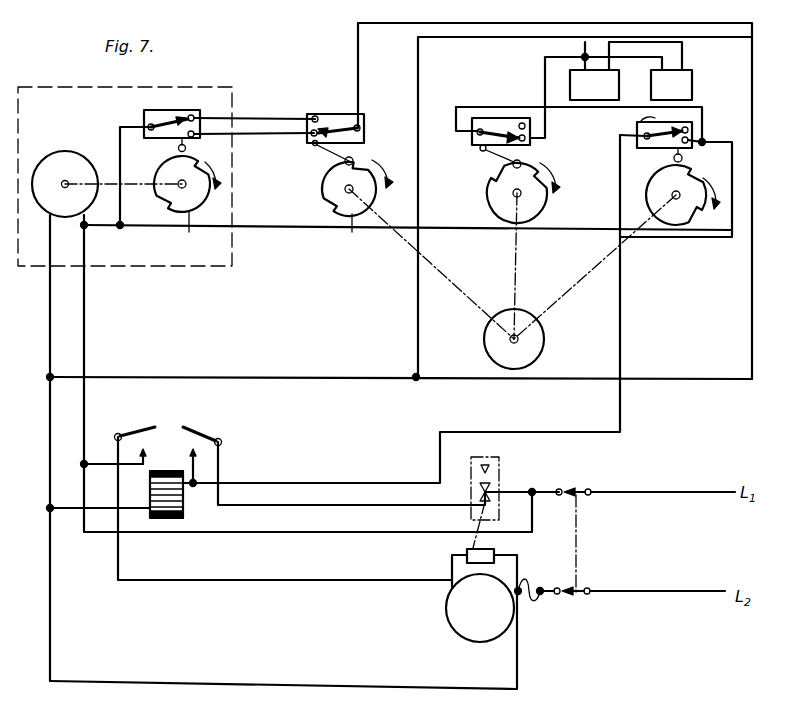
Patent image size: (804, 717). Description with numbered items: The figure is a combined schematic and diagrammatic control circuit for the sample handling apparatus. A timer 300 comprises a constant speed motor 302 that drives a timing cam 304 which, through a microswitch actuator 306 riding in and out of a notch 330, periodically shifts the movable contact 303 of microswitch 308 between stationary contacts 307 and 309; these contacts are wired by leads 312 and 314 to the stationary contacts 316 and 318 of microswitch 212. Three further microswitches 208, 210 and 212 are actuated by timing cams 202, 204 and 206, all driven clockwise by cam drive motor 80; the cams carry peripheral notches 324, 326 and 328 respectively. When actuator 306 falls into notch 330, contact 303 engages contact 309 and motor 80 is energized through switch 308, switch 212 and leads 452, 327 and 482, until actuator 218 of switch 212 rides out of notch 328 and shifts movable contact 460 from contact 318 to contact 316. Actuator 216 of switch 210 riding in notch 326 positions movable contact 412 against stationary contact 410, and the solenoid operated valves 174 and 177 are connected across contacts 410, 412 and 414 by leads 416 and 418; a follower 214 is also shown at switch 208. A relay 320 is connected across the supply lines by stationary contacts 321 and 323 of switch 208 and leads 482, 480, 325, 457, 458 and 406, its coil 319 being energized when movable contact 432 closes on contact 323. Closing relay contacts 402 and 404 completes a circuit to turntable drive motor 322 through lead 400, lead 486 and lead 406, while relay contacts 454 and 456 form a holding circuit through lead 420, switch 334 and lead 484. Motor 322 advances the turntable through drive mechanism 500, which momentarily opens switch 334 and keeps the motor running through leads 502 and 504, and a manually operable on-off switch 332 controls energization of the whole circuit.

The timer 300 is at (48, 88).
The constant speed motor 302 is at (52, 152).
The movable contact 303 is at (163, 110).
The timing cam 304 is at (205, 193).
The microswitch actuator 306 is at (178, 150).
The stationary contact 307 is at (195, 115).
The microswitch 308 is at (135, 120).
The stationary contact 309 is at (218, 162).
The lead 312 is at (232, 117).
The lead 314 is at (240, 136).
The stationary contact 316 is at (312, 112).
The stationary contact 318 is at (312, 136).
The relay coil 319 is at (186, 508).
The relay 320 is at (193, 423).
The stationary contact 321 is at (622, 138).
The drive motor 322 is at (468, 628).
The stationary contact 323 is at (690, 139).
The notch 324 is at (718, 187).
The lead 325 is at (289, 483).
The notch 326 is at (570, 178).
The lead 327 is at (313, 376).
The notch 328 is at (323, 196).
The notch 330 is at (195, 233).
The manually operable on-off switch 332 is at (580, 490).
The switch 334 is at (503, 465).
The cam drive motor 80 is at (545, 341).
The solenoid operated valve 174 is at (594, 85).
The solenoid operated valve 177 is at (671, 85).
The timing cam 202 is at (648, 185).
The timing cam 204 is at (495, 195).
The timing cam 206 is at (348, 238).
The microswitch 208 is at (692, 122).
The microswitch 210 is at (478, 118).
The microswitch 212 is at (325, 113).
The cam follower 214 is at (684, 158).
The actuator 216 is at (492, 158).
The actuator 218 is at (355, 160).
The lead 400 is at (320, 582).
The movable contact 402 is at (144, 423).
The stationary contact 404 is at (147, 453).
The lead 406 is at (314, 533).
The stationary contact 410 is at (530, 142).
The movable contact 412 is at (497, 131).
The contact 414 is at (476, 135).
The lead 416 is at (473, 38).
The lead 418 is at (544, 60).
The lead 420 is at (430, 509).
The movable contact 432 is at (640, 120).
The lead 452 is at (404, 24).
The relay contact 454 is at (205, 430).
The relay contact 456 is at (219, 450).
The lead 457 is at (462, 232).
The lead 458 is at (85, 330).
The movable contact 460 is at (337, 115).
The lead 480 is at (103, 510).
The lead 482 is at (180, 684).
The lead 484 is at (544, 490).
The lead 486 is at (97, 462).
The turntable drive mechanism 500 is at (470, 548).
The lead 502 is at (452, 566).
The lead 504 is at (517, 562).